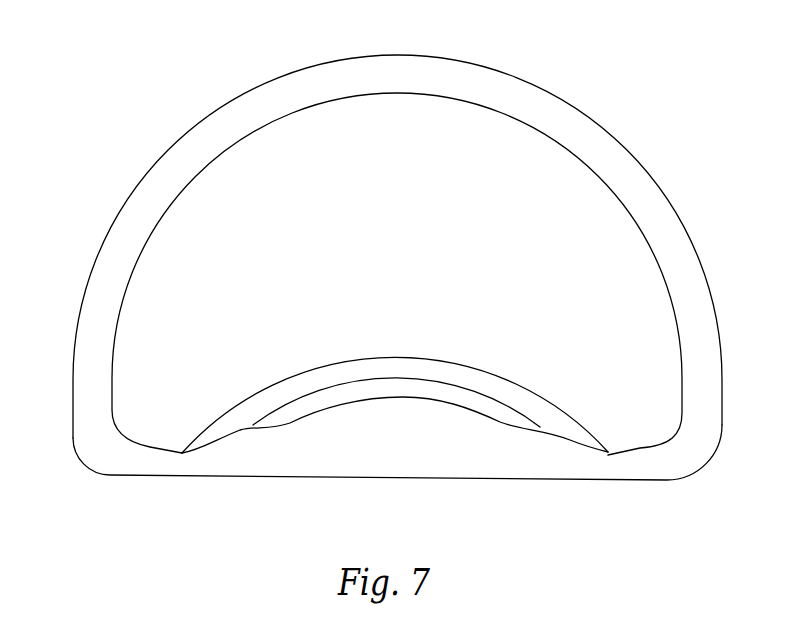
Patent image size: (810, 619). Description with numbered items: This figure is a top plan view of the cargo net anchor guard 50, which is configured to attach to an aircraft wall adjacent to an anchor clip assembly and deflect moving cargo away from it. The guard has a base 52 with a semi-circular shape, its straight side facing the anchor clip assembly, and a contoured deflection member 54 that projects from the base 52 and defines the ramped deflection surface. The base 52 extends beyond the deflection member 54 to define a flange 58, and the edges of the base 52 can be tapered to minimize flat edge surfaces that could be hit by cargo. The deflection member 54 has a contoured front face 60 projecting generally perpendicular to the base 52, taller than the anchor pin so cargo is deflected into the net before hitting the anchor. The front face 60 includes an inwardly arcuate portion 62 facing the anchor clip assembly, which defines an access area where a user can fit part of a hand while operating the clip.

The cargo net anchor guard 50 is at (157, 112).
The base 52 is at (130, 210).
The deflection member 54 is at (292, 162).
The flange 58 is at (105, 447).
The front face 60 is at (177, 443).
The inwardly arcuate portion 62 is at (350, 391).